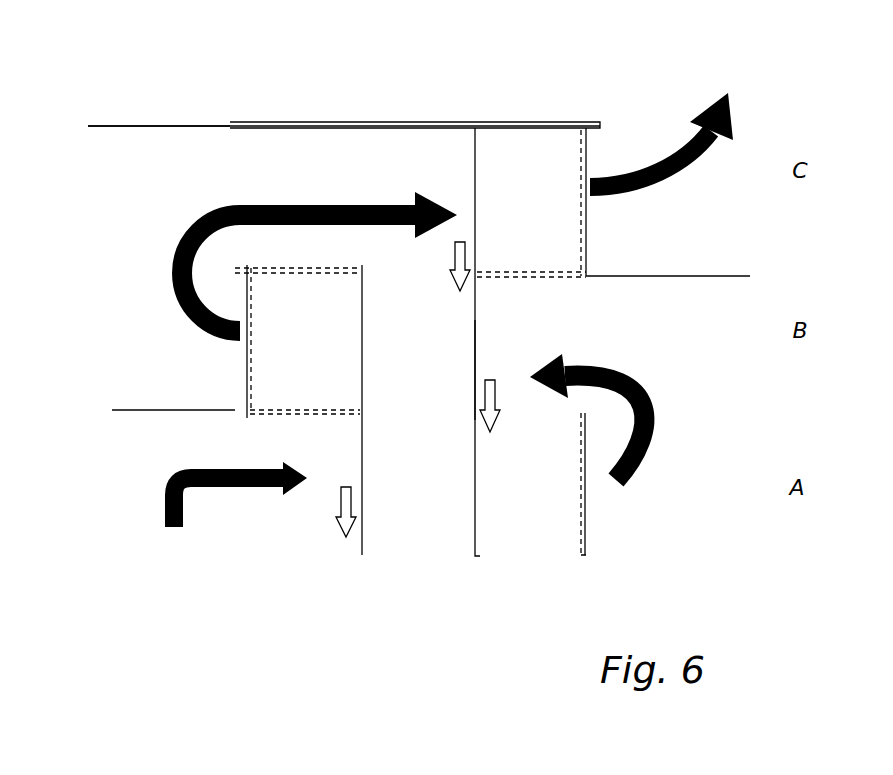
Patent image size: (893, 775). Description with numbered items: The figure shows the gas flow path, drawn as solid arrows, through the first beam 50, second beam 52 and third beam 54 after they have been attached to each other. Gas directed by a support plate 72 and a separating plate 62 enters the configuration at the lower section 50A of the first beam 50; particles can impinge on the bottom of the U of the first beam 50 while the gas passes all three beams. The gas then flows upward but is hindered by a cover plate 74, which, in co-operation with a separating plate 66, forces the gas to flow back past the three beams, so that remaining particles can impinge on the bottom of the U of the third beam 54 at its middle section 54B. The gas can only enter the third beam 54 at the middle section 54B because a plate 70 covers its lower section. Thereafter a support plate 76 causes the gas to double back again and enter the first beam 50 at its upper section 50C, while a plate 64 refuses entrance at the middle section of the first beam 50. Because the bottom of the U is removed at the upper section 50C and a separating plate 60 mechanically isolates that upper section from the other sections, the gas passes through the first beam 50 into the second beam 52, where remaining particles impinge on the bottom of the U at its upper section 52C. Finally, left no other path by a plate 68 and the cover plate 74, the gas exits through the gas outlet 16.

The gas outlet 16 is at (680, 140).
The first beam 50 is at (311, 522).
The lower section of the first beam 50A is at (290, 507).
The upper section of the first beam 50C is at (258, 170).
The second beam 52 is at (422, 531).
The upper section of the second beam 52C is at (473, 172).
The third beam 54 is at (530, 542).
The middle section of the third beam 54B is at (525, 330).
The separating plate 60 is at (334, 273).
The separating plate 62 is at (285, 408).
The plate 64 is at (247, 372).
The separating plate 66 is at (580, 253).
The plate 68 is at (580, 226).
The plate 70 is at (585, 515).
The support plate 72 is at (100, 415).
The cover plate 74 is at (728, 276).
The support plate 76 is at (118, 125).